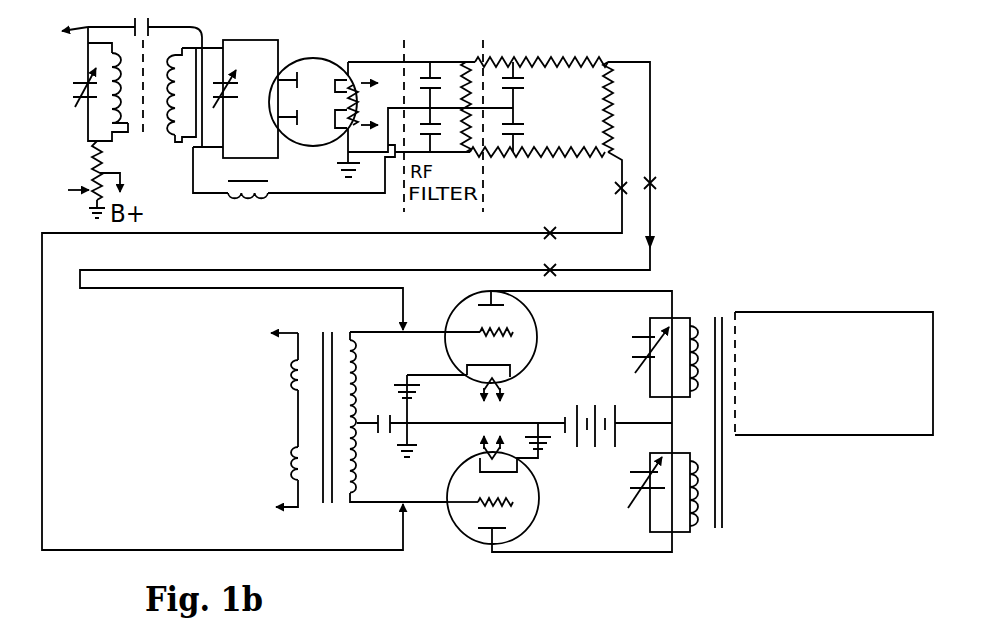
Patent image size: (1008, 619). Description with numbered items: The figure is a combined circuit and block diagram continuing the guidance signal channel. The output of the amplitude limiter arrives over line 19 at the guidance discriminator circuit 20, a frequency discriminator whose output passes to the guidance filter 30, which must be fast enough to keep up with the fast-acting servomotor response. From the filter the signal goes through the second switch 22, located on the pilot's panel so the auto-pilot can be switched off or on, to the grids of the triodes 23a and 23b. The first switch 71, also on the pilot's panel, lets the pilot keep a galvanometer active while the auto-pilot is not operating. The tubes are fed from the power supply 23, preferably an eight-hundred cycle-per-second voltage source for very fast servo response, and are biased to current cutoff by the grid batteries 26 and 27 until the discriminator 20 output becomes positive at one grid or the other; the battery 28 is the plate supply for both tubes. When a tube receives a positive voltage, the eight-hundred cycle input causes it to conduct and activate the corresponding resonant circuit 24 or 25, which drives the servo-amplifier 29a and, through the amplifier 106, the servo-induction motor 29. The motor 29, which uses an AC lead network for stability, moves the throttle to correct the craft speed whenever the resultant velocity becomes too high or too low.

The line 19 is at (78, 26).
The guidance discriminator circuit 20 is at (277, 40).
The guidance filter 30 is at (572, 60).
The first switch 71 is at (612, 188).
The second switch 22 is at (551, 226).
The power supply 23 is at (288, 379).
The triode 23a is at (540, 330).
The triode 23b is at (452, 480).
The amplifier 106 is at (601, 378).
The grid battery 26 is at (423, 388).
The grid battery 27 is at (542, 460).
The battery 28 is at (587, 448).
The resonant circuit 24 is at (678, 313).
The resonant circuit 25 is at (673, 533).
The servo-amplifier 29a is at (820, 312).
The servo-induction motor 29 is at (810, 428).